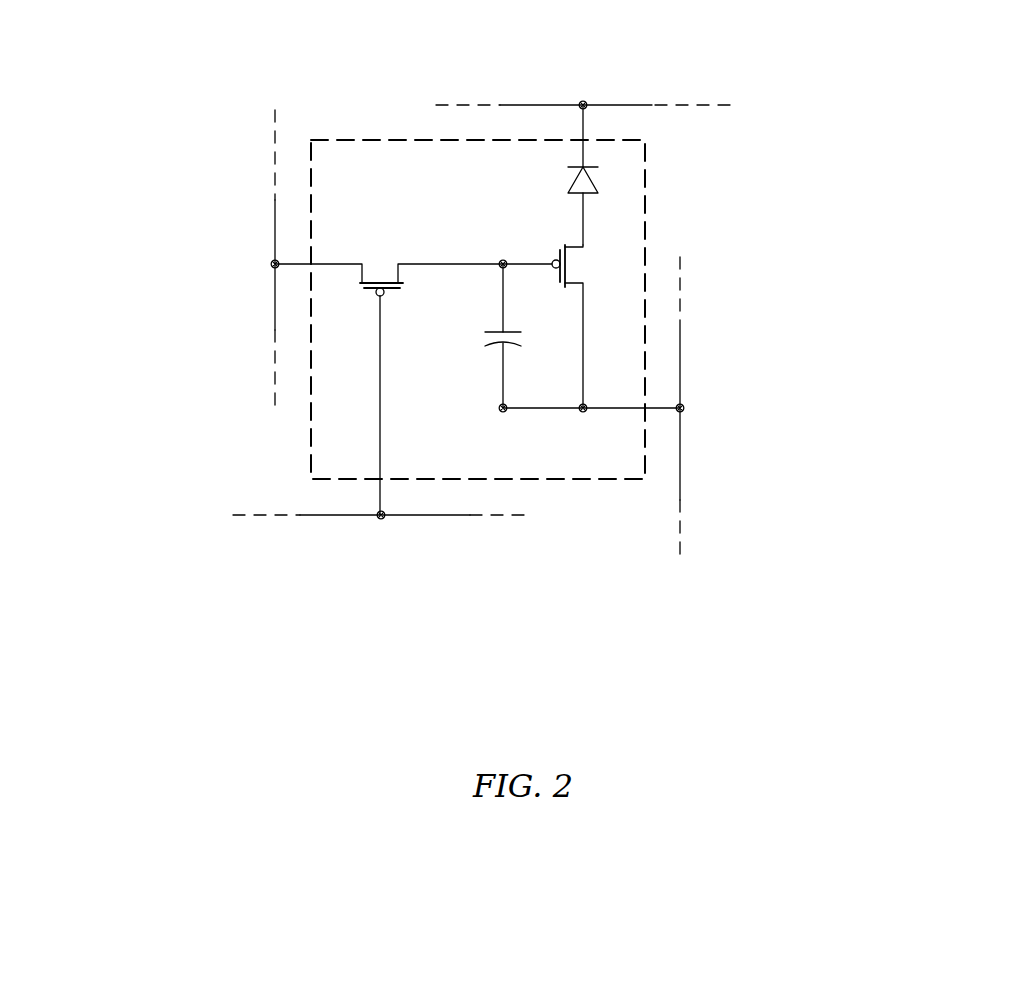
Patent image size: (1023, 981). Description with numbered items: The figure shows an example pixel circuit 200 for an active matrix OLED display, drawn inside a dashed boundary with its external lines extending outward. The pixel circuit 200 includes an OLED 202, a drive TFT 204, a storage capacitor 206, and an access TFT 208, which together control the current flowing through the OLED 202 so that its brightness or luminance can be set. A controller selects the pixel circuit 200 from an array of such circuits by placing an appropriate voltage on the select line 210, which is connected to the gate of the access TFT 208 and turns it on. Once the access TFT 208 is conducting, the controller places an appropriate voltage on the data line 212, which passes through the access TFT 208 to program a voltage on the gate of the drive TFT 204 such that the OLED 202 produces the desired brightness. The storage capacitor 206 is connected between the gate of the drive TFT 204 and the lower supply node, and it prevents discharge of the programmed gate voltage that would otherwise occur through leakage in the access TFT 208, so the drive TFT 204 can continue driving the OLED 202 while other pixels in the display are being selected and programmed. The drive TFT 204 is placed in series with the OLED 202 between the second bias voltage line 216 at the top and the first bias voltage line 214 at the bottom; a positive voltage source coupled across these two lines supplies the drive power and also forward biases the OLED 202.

The pixel circuit 200 is at (878, 652).
The OLED 202 is at (568, 182).
The drive TFT 204 is at (577, 264).
The storage capacitor 206 is at (478, 333).
The access TFT 208 is at (380, 272).
The select line 210 is at (352, 422).
The data line 212 is at (275, 224).
The first bias voltage line 214 is at (680, 452).
The second bias voltage line 216 is at (650, 105).